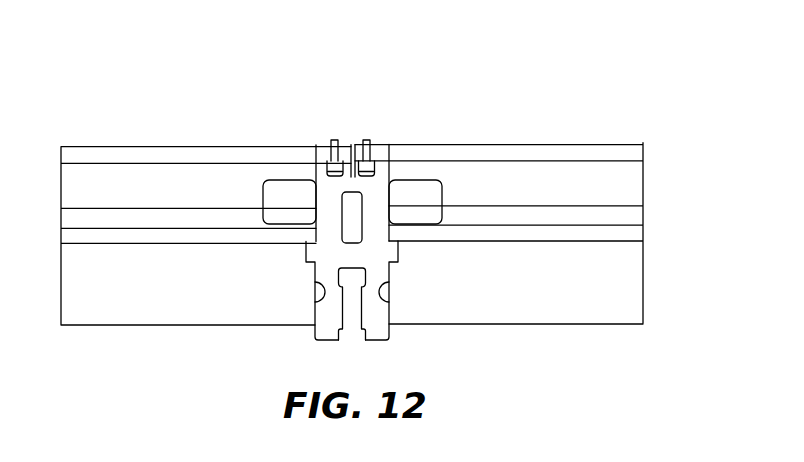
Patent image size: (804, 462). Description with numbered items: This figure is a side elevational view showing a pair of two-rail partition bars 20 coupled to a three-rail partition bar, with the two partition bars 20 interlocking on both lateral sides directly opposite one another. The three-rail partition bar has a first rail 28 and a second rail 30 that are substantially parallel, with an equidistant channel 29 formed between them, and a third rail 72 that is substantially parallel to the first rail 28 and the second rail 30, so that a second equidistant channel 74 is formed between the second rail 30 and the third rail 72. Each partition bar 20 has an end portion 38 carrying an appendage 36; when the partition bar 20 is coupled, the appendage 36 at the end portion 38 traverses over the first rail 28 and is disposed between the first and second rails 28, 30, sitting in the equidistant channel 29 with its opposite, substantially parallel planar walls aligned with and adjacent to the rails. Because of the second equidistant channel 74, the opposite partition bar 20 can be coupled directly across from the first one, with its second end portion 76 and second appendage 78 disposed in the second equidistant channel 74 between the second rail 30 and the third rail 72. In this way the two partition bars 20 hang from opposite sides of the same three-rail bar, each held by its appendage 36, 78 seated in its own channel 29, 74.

The partition bar 20 is at (137, 143).
The first rail 28 is at (319, 186).
The equidistant channel 29 is at (333, 178).
The second rail 30 is at (354, 160).
The appendage 36 is at (331, 141).
The end portion 38 is at (322, 297).
The third rail 72 is at (384, 186).
The second equidistant channel 74 is at (369, 178).
The second end portion 76 is at (383, 297).
The second appendage 78 is at (369, 141).